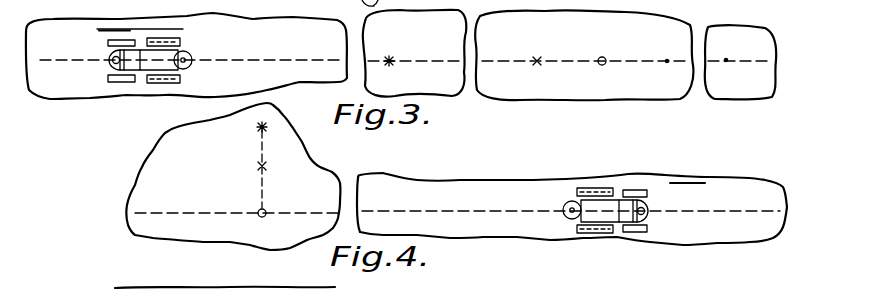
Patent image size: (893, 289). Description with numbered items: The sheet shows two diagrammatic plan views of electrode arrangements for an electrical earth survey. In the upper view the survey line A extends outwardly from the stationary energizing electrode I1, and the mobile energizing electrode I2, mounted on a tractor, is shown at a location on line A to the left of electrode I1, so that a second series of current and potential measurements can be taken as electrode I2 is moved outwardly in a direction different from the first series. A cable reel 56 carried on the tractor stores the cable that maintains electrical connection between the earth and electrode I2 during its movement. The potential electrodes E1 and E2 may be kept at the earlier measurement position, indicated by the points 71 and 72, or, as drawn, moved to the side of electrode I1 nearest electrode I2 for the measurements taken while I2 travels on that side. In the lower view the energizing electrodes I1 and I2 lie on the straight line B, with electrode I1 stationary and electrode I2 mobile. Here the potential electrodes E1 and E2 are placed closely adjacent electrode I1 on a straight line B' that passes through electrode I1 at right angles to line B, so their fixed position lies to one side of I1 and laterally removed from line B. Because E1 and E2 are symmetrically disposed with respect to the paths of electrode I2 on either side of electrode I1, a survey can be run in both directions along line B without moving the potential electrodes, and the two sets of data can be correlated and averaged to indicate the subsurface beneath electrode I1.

In FIG. 3, the line A— A is at (406, 62).
In FIG. 4, the line B— B is at (453, 213).
In FIG. 4, the line B'— B' is at (259, 175).
In FIG. 3, the mobile electrode I2 is at (161, 58).
In FIG. 4, the mobile electrode I2 is at (645, 208).
In FIG. 3, the stationary electrode I1 is at (601, 57).
In FIG. 4, the stationary electrode I1 is at (266, 211).
In FIG. 3, the potential electrode E1 is at (538, 58).
In FIG. 4, the potential electrode E1 is at (257, 166).
In FIG. 3, the potential electrode E2 is at (389, 59).
In FIG. 4, the potential electrode E2 is at (258, 127).
In FIG. 3, the cable reel 56 is at (188, 65).
In FIG. 4, the cable reel 56 is at (564, 206).
In FIG. 3, the point 71 is at (667, 59).
In FIG. 3, the point 72 is at (726, 58).